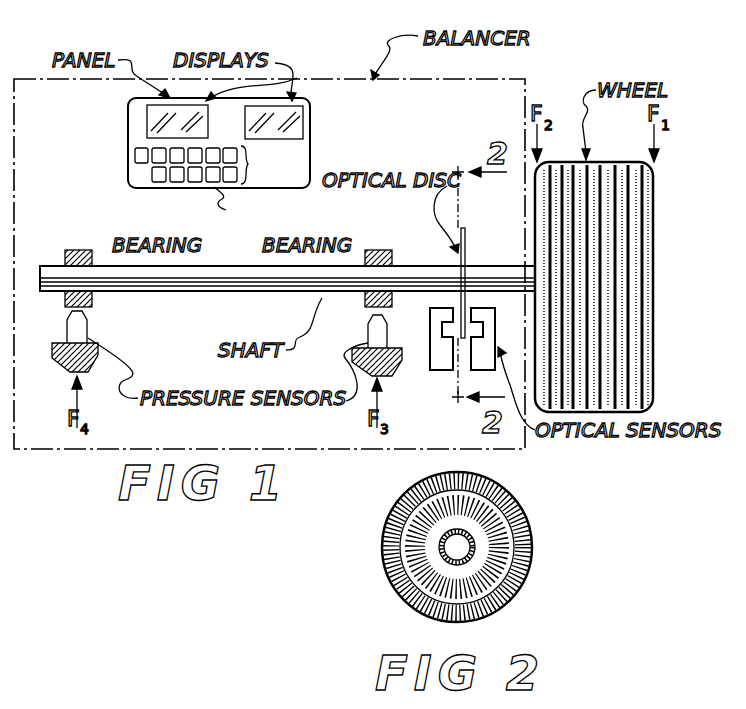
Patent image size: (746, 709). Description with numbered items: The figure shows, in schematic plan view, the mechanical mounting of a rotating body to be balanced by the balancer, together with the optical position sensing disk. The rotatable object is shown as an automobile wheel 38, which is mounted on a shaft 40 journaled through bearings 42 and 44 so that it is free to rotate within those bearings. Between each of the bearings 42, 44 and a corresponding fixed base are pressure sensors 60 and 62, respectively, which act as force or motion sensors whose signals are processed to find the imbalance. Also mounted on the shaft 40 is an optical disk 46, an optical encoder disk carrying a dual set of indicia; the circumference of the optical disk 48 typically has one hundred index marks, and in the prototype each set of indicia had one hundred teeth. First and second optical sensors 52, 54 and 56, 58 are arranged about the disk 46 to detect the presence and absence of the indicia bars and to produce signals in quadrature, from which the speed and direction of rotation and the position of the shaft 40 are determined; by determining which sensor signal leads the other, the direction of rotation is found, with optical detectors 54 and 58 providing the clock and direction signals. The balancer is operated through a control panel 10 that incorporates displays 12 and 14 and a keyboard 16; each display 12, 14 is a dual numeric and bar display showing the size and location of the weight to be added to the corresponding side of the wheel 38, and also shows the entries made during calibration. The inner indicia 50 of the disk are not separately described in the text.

In FIG. 1, the control panel 10 is at (203, 189).
In FIG. 1, the display 12 is at (303, 130).
In FIG. 1, the display 14 is at (147, 124).
In FIG. 1, the keyboard 16 is at (236, 184).
In FIG. 1, the automobile wheel 38 is at (655, 257).
In FIG. 1, the shaft 40 is at (246, 291).
In FIG. 1, the bearing 42 is at (375, 249).
In FIG. 1, the bearing 44 is at (78, 249).
In FIG. 1, the optical disk 46 is at (467, 239).
In FIG. 2, the optical disk 46 is at (532, 522).
In FIG. 2, the circumference of optical disk 48 is at (505, 505).
In FIG. 2, the inner indicia 50 is at (501, 546).
In FIG. 1, the optical sensor 52 is at (446, 372).
In FIG. 1, the optical detector 54 is at (476, 346).
In FIG. 1, the optical sensor 56 is at (452, 306).
In FIG. 1, the optical detector 58 is at (474, 306).
In FIG. 1, the pressure sensor 60 is at (369, 331).
In FIG. 1, the pressure sensor 62 is at (88, 318).